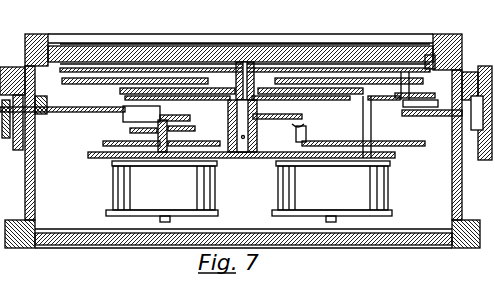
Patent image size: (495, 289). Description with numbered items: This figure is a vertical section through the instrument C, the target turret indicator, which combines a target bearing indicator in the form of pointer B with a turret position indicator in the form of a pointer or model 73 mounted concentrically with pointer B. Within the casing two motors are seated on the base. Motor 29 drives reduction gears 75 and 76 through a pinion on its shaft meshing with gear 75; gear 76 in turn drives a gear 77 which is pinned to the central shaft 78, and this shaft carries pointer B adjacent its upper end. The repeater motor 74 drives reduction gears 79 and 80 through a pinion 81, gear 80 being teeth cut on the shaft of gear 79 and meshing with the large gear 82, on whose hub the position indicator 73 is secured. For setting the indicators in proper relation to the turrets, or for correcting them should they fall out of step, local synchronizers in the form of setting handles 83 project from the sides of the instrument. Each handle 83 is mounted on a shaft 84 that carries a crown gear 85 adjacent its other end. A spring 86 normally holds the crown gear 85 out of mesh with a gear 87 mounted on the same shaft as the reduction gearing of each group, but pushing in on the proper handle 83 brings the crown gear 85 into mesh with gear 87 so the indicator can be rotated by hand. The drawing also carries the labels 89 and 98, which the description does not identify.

The instrument C is at (463, 190).
The turret position indicator 73 is at (166, 44).
The pointer B is at (250, 44).
The setting handles 83 is at (7, 138).
The spring 86 is at (46, 97).
The shaft 84 is at (70, 112).
The large gear 82 is at (124, 93).
The reduction gear 80 is at (372, 93).
The reduction gear 76 is at (158, 117).
The crown gear 85 is at (128, 129).
The reduction gear 75 is at (102, 143).
The gear 87 is at (195, 131).
The core 98 is at (150, 133).
The spring 89 is at (292, 122).
The gear 77 is at (304, 122).
The pinion 81 is at (320, 132).
The reduction gear 79 is at (426, 146).
The central shaft 78 is at (241, 166).
The motor 29 is at (162, 191).
The repeater motor 74 is at (332, 191).